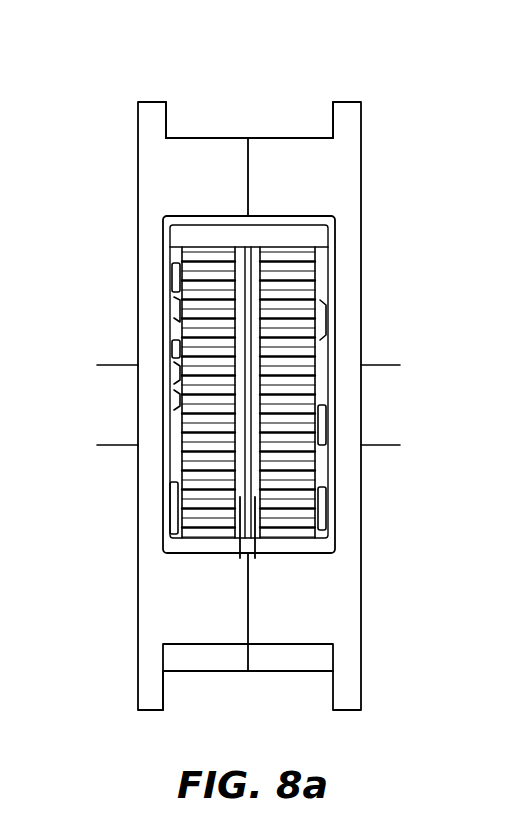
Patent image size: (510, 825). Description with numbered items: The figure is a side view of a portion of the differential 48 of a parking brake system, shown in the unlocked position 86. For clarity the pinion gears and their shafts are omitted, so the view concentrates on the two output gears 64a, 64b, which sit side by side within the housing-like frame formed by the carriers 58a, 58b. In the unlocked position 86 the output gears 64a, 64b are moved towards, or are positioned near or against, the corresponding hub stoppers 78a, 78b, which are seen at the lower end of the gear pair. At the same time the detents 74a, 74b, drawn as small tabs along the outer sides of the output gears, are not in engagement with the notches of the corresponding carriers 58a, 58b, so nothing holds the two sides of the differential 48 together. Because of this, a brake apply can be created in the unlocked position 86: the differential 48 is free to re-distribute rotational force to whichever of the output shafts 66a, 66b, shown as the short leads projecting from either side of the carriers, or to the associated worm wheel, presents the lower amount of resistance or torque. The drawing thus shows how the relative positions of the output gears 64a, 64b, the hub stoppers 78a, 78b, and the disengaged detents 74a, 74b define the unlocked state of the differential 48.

The differential 48 is at (282, 57).
The unlocked position 86 is at (290, 113).
The carrier 58a is at (157, 120).
The carrier 58b is at (352, 117).
The output gear 64a is at (215, 297).
The output gear 64b is at (300, 305).
The detent 74a is at (172, 292).
The detent 74b is at (322, 443).
The output shaft 66a is at (113, 411).
The output shaft 66b is at (385, 392).
The hub stopper 78a is at (240, 556).
The hub stopper 78b is at (255, 556).